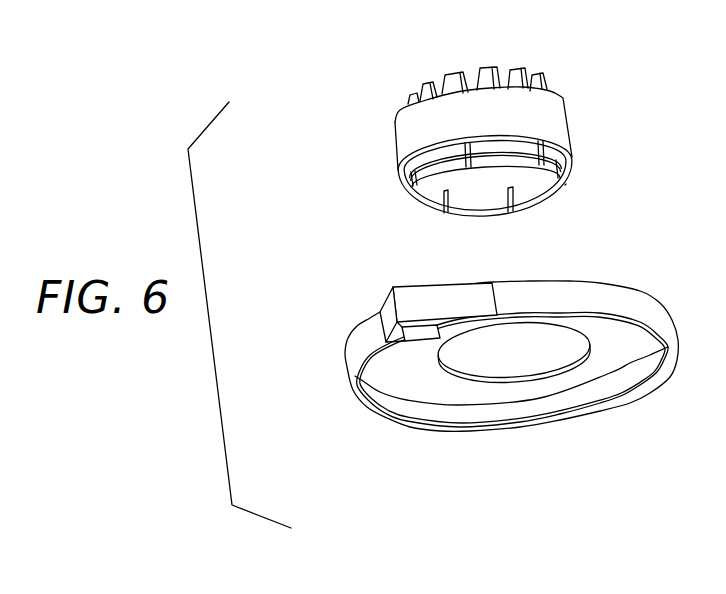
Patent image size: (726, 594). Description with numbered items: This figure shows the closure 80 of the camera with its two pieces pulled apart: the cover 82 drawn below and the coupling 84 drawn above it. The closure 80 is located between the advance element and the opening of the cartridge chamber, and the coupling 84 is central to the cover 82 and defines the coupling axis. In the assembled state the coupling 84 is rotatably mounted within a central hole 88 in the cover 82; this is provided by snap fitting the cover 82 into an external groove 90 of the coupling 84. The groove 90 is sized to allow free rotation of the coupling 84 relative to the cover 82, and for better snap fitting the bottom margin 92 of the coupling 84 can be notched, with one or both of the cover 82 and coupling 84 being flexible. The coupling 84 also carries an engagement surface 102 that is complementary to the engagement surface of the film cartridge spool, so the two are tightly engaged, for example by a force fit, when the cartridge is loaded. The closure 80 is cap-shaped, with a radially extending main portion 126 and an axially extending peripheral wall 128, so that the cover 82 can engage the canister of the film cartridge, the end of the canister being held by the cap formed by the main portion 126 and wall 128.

The closure 80 is at (211, 340).
The cover 82 is at (498, 362).
The coupling 84 is at (460, 140).
The central hole 88 is at (548, 384).
The external groove 90 is at (402, 171).
The bottom margin 92 is at (565, 186).
The engagement surface 102 is at (472, 197).
The main portion 126 is at (407, 377).
The peripheral wall 128 is at (462, 432).